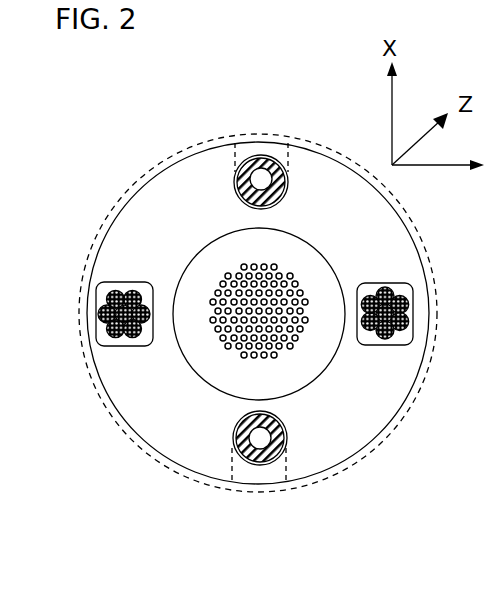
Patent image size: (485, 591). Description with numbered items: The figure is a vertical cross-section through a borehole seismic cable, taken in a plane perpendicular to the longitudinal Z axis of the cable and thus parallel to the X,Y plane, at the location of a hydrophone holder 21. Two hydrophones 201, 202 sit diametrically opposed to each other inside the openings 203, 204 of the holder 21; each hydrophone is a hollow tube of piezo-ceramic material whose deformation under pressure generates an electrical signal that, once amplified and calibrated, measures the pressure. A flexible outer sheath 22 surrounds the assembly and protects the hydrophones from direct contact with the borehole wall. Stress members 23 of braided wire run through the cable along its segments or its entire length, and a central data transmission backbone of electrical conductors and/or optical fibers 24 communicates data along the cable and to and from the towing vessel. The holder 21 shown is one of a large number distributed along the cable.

The hydrophone holder 21 is at (110, 517).
The flexible outer sheath 22 is at (123, 198).
The stress members 23 is at (152, 290).
The electrical conductors and/or optical fibers 24 is at (276, 362).
The hydrophone 201 is at (274, 203).
The hydrophone 202 is at (272, 419).
The opening 203 is at (286, 154).
The opening 204 is at (286, 467).